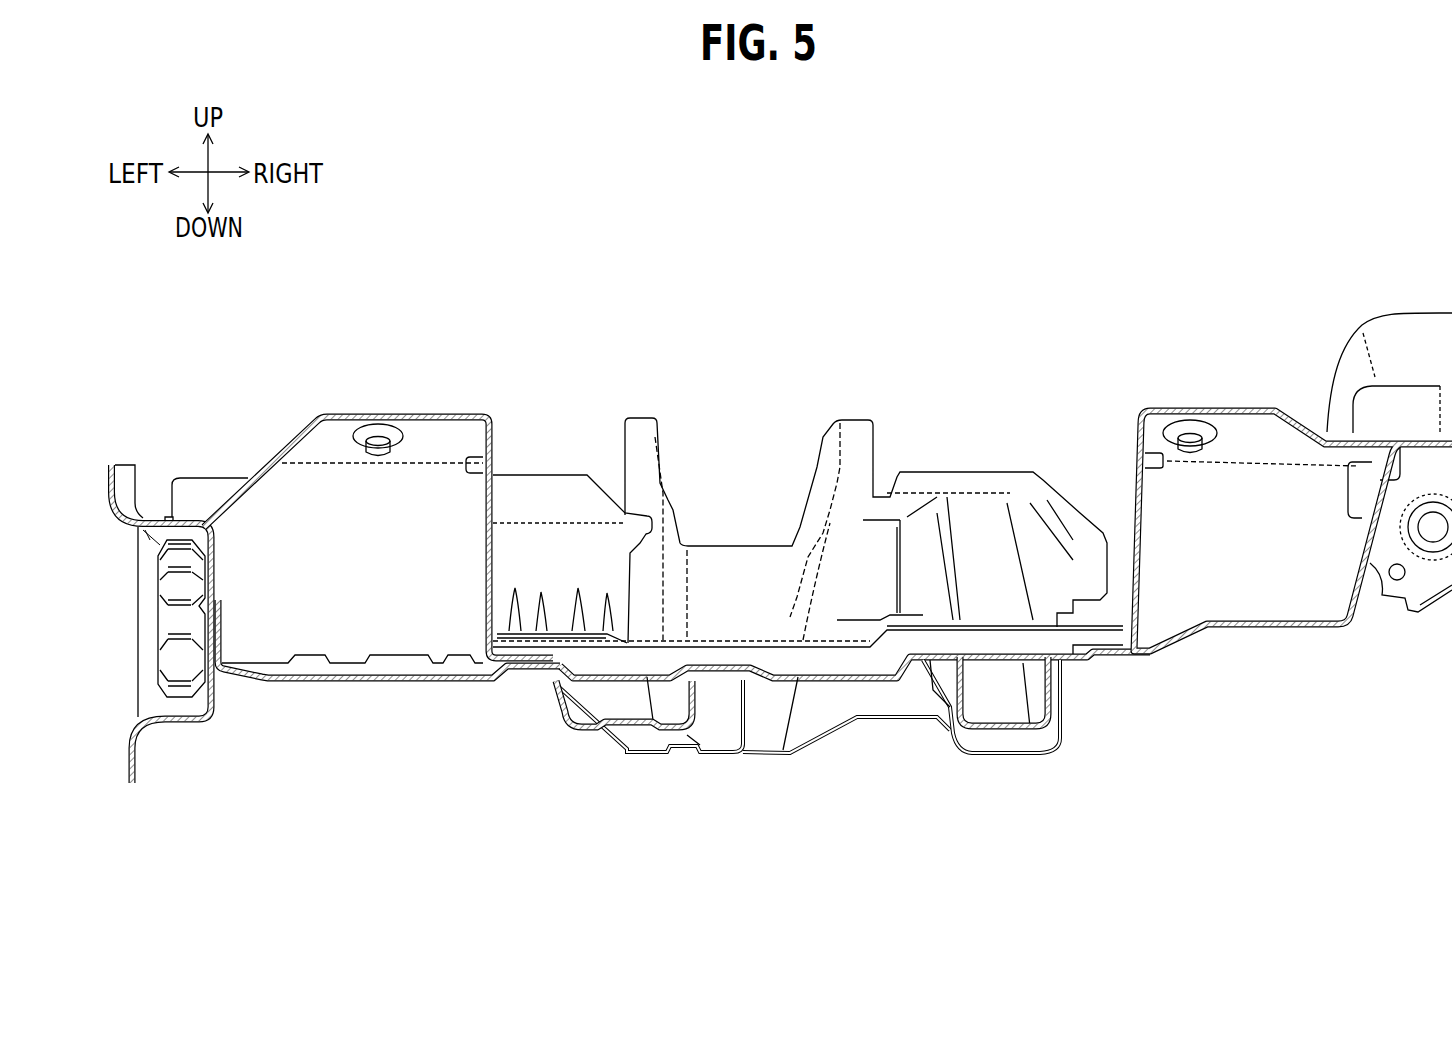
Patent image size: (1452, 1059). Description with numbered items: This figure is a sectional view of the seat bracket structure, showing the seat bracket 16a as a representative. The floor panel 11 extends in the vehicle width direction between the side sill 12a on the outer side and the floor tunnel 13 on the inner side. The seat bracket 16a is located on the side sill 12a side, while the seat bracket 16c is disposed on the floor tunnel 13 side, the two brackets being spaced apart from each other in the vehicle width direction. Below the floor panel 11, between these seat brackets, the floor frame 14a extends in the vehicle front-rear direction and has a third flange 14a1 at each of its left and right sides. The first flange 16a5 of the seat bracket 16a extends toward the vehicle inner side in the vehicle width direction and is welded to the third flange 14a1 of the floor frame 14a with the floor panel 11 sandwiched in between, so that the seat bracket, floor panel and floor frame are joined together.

The floor panel 11 is at (352, 683).
The side sill 12a is at (143, 518).
The floor tunnel 13 is at (1363, 563).
The floor frame 14a is at (620, 730).
The third flange 14a1 is at (530, 681).
The seat bracket 16a is at (392, 411).
The first flange 16a5 is at (523, 630).
The seat bracket 16c is at (1213, 408).